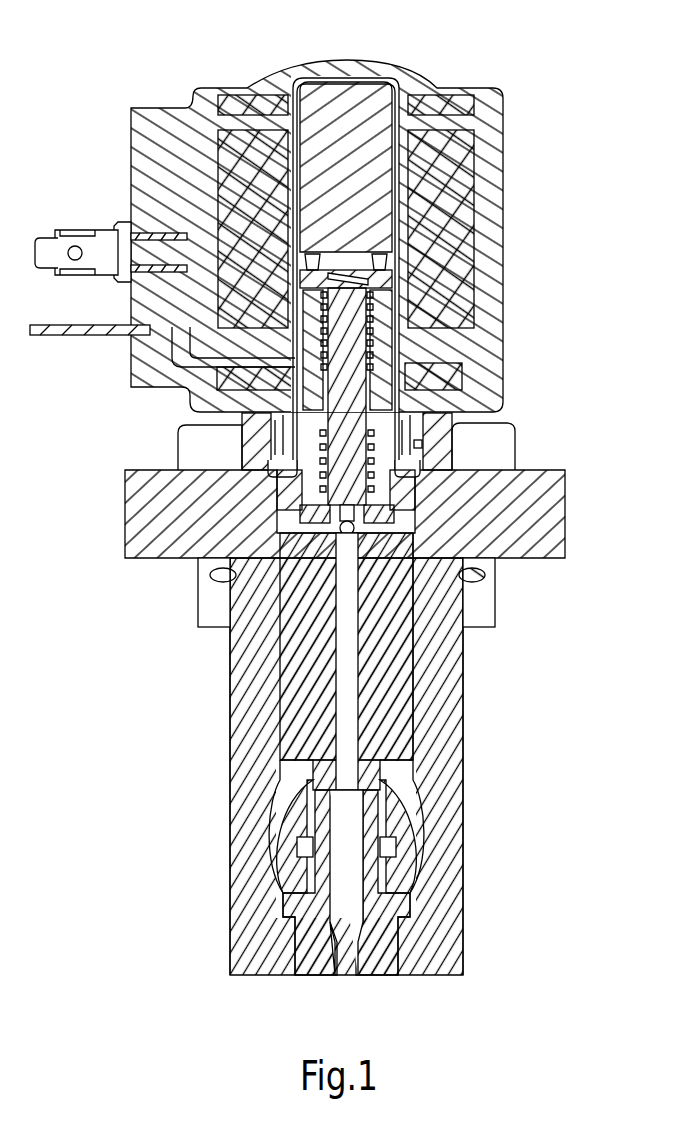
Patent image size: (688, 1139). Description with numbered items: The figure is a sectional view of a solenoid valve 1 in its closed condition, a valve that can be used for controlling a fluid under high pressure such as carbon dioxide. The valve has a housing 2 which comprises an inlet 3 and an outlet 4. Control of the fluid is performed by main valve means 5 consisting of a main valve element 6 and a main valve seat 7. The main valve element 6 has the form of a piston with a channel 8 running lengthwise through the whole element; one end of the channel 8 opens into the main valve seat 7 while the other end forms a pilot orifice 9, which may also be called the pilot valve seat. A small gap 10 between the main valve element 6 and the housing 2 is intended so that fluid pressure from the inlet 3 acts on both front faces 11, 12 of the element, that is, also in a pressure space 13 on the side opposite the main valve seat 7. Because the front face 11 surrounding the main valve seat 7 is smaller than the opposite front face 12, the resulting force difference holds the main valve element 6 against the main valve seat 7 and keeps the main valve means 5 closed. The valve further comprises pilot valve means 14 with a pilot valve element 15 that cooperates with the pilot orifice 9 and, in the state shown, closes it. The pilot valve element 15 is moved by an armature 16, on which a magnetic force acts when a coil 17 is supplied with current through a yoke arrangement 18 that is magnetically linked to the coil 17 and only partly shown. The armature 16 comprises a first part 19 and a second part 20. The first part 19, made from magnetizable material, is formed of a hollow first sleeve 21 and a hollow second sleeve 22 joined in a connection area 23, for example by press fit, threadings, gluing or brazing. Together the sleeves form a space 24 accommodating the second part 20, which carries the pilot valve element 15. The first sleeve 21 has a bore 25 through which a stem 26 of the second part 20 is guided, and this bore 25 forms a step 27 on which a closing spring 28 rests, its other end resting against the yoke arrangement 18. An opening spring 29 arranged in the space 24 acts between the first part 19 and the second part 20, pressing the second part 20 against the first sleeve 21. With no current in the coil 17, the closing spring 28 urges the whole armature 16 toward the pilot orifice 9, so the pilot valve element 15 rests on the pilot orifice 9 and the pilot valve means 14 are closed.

The solenoid valve 1 is at (553, 68).
The housing 2 is at (443, 738).
The inlet 3 is at (410, 838).
The outlet 4 is at (352, 963).
The main valve means 5 is at (204, 744).
The main valve element 6 is at (397, 688).
The main valve seat 7 is at (352, 820).
The channel 8 is at (342, 655).
The pilot orifice 9 is at (357, 548).
The sleeve 10 is at (417, 708).
The front face 11 is at (235, 805).
The front face 12 is at (320, 525).
The pressure space 13 is at (430, 477).
The pilot valve means 14 is at (218, 447).
The pilot valve element 15 is at (330, 512).
The armature 16 is at (455, 385).
The coil 17 is at (372, 300).
The yoke arrangement 18 is at (348, 107).
The first part 19 is at (378, 330).
The second part 20 is at (300, 403).
The first sleeve 21 is at (407, 360).
The second sleeve 22 is at (400, 425).
The connection area 23 is at (177, 351).
The space 24 is at (280, 462).
The bore 25 is at (392, 290).
The stem 26 is at (290, 352).
The step 27 is at (140, 301).
The closing spring 28 is at (408, 252).
The opening spring 29 is at (418, 428).